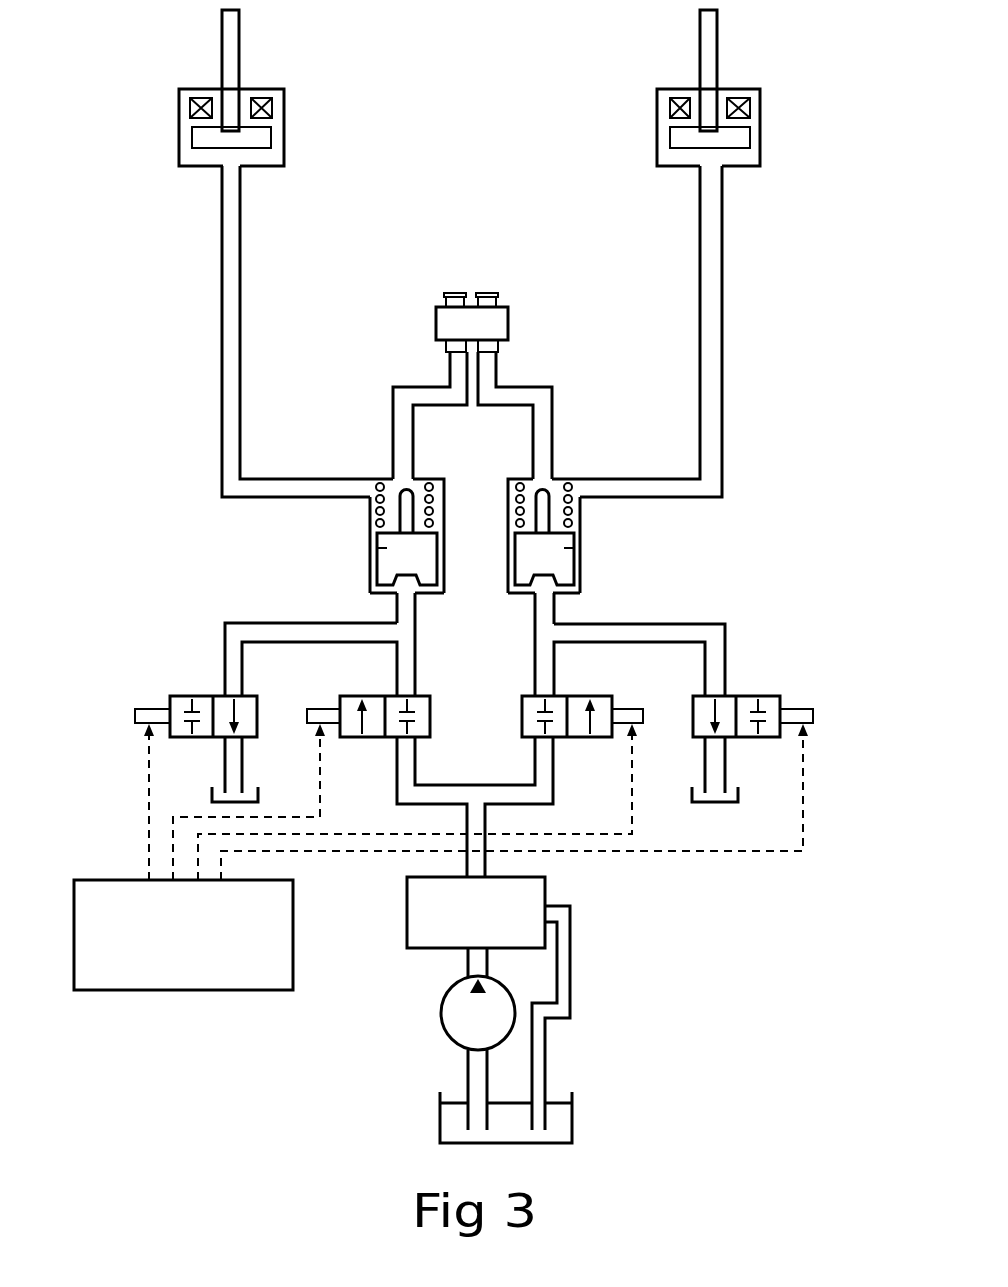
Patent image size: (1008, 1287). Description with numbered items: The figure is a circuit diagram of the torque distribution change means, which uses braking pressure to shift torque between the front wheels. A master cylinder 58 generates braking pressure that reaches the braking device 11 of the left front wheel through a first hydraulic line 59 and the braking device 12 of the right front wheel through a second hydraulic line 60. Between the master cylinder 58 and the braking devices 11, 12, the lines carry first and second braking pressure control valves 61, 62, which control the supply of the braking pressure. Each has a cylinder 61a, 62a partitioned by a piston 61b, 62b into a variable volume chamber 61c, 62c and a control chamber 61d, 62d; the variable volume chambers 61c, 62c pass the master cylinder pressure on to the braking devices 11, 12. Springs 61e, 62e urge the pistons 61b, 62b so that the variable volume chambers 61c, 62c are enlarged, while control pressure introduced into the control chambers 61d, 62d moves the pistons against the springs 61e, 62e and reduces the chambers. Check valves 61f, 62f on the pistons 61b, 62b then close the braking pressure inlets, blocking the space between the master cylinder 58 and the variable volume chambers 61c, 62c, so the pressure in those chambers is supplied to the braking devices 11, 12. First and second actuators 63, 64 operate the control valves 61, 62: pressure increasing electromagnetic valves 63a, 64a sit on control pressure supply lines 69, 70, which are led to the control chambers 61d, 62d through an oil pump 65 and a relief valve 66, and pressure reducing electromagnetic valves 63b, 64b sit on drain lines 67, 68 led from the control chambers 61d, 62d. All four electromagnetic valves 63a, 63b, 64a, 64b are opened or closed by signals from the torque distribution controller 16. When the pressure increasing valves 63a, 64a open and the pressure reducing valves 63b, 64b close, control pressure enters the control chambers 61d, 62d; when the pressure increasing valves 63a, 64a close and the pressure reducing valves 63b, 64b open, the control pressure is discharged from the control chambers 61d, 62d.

The braking device 11 is at (284, 100).
The braking device 12 is at (760, 100).
The torque distribution controller 16 is at (183, 990).
The master cylinder 58 is at (508, 318).
The first hydraulic line 59 is at (240, 270).
The second hydraulic line 60 is at (722, 270).
The first braking pressure control valve 61 is at (373, 524).
The cylinder 61a is at (372, 565).
The piston 61b is at (380, 548).
The variable volume chamber 61c is at (418, 490).
The control chamber 61d is at (385, 594).
The spring 61e is at (371, 480).
The check valve 61f is at (397, 448).
The second braking pressure control valve 62 is at (568, 524).
The cylinder 62a is at (578, 565).
The piston 62b is at (570, 548).
The variable volume chamber 62c is at (535, 490).
The control chamber 62d is at (565, 594).
The spring 62e is at (580, 480).
The check valve 62f is at (548, 448).
The first actuator 63 is at (250, 737).
The pressure increasing electromagnetic valve 63a is at (347, 696).
The pressure reducing electromagnetic valve 63b is at (207, 696).
The second actuator 64 is at (549, 738).
The pressure increasing electromagnetic valve 64a is at (600, 696).
The pressure reducing electromagnetic valve 64b is at (745, 696).
The oil pump 65 is at (441, 1030).
The relief valve 66 is at (407, 930).
The drain line 67 is at (247, 625).
The drain line 68 is at (708, 625).
The control pressure supply line 69 is at (397, 770).
The control pressure supply line 70 is at (553, 775).